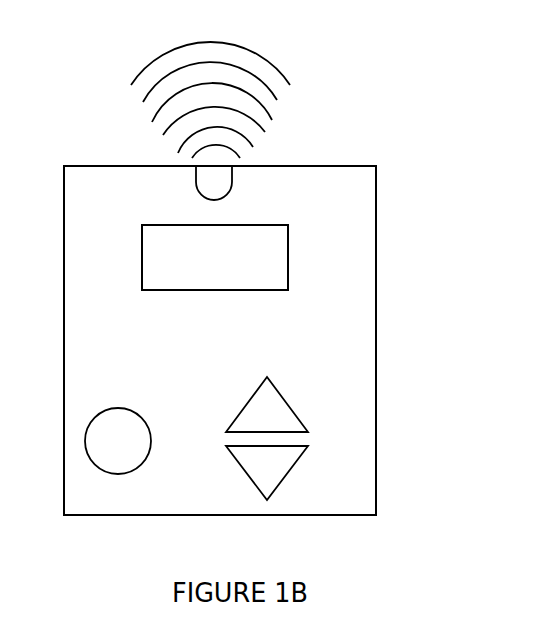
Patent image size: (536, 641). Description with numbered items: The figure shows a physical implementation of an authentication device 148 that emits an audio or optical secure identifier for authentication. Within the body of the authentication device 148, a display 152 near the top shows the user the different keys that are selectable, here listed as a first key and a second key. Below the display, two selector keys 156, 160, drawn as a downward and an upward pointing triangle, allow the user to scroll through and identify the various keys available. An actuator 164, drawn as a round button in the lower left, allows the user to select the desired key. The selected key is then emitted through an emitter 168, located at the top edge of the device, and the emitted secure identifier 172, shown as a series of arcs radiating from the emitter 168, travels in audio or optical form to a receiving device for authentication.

The authentication device 148 is at (368, 138).
The emitted secure identifier 172 is at (248, 42).
The emitter 168 is at (232, 175).
The display 152 is at (288, 257).
The selector key 160 is at (292, 405).
The selector key 156 is at (292, 467).
The actuator 164 is at (85, 452).